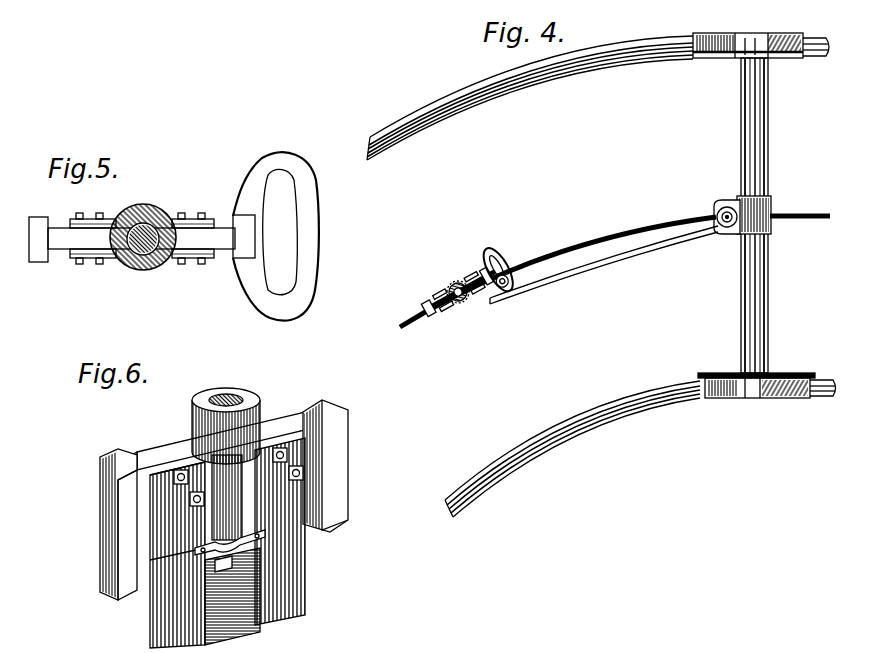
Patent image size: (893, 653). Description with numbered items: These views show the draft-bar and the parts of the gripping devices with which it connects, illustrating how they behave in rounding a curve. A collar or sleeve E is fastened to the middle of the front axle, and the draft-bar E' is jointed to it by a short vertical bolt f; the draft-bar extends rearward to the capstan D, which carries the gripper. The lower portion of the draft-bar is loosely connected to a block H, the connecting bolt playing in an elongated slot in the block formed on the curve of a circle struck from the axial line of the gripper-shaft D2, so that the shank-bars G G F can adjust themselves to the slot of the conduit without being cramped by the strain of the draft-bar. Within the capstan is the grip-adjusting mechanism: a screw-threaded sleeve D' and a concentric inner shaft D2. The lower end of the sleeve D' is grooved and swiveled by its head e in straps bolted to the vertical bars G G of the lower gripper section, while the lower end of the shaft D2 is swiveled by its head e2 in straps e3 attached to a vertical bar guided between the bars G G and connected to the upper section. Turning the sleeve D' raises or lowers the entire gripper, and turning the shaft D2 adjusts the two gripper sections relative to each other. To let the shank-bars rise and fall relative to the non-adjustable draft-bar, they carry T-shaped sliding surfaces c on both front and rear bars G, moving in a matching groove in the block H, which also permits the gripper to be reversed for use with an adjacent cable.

In FIG. 4, the collar or sleeve E is at (615, 257).
In FIG. 4, the draft-bar E' is at (604, 265).
In FIG. 4, the vertical bolt f is at (720, 211).
In FIG. 4, the block H is at (490, 254).
In FIG. 5, the block H is at (318, 235).
In FIG. 4, the capstan D is at (468, 298).
In FIG. 4, the sleeve D' is at (442, 284).
In FIG. 5, the sleeve D' is at (151, 219).
In FIG. 6, the sleeve D' is at (247, 391).
In FIG. 5, the inner shaft D2 is at (132, 266).
In FIG. 6, the inner shaft D2 is at (228, 390).
In FIG. 4, the T-shaped sliding surfaces c is at (462, 292).
In FIG. 5, the T-shaped sliding surfaces c is at (141, 238).
In FIG. 6, the T-shaped sliding surfaces c is at (230, 500).
In FIG. 6, the head e is at (238, 494).
In FIG. 6, the head e2 is at (228, 575).
In FIG. 6, the straps e3 is at (258, 546).
In FIG. 6, the vertical bars G is at (221, 543).
In FIG. 6, the shank-bar F is at (230, 636).